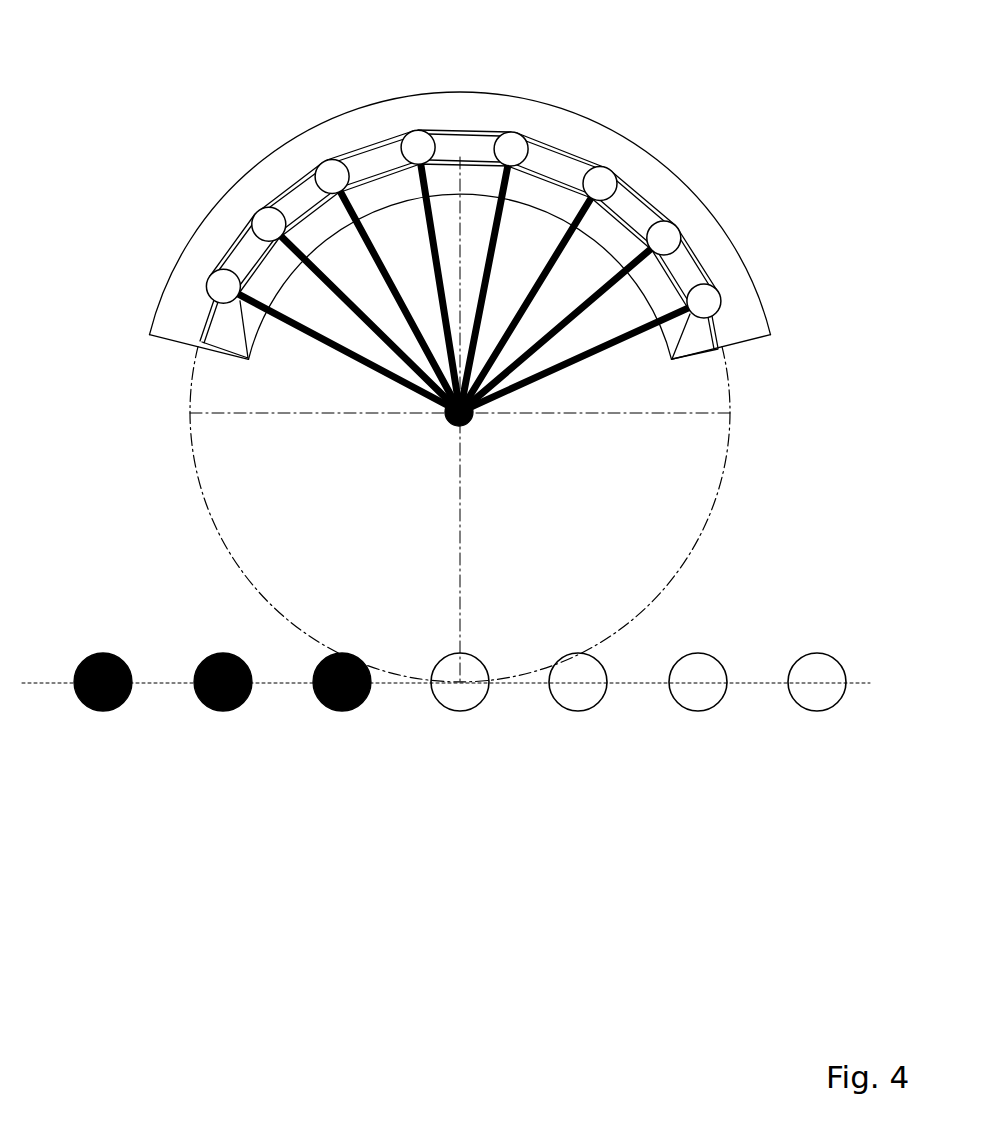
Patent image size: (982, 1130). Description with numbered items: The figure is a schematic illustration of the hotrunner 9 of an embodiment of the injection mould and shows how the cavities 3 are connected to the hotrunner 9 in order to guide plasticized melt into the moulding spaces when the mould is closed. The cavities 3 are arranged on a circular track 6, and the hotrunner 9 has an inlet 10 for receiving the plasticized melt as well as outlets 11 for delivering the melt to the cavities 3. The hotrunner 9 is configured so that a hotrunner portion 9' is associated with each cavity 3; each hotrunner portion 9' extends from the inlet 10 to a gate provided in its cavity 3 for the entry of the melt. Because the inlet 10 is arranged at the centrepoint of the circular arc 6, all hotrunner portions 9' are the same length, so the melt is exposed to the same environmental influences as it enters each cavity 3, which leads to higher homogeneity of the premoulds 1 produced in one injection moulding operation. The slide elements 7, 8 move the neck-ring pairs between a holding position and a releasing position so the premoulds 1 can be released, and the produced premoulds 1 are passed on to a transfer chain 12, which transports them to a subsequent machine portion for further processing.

The premould 1 is at (348, 715).
The cavity 3 is at (332, 175).
The circular track 6 is at (663, 582).
The slide element 7 is at (207, 278).
The slide element 8 is at (242, 336).
The hotrunner 9 is at (341, 348).
The hotrunner portion 9' is at (582, 334).
The inlet 10 is at (468, 428).
The outlet 11 is at (745, 345).
The transfer chain 12 is at (567, 720).